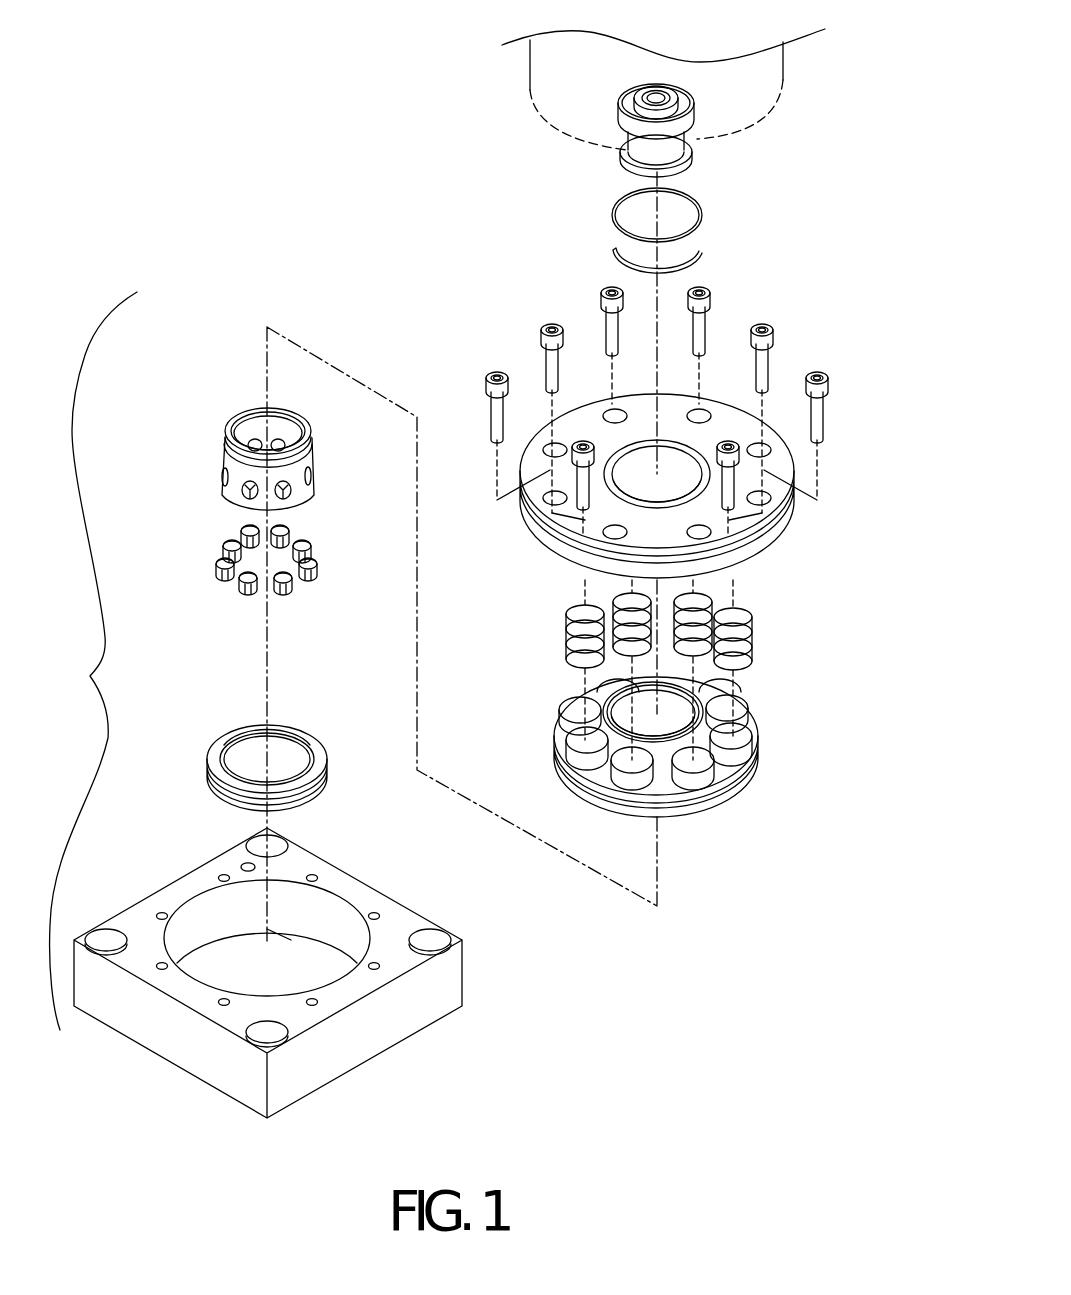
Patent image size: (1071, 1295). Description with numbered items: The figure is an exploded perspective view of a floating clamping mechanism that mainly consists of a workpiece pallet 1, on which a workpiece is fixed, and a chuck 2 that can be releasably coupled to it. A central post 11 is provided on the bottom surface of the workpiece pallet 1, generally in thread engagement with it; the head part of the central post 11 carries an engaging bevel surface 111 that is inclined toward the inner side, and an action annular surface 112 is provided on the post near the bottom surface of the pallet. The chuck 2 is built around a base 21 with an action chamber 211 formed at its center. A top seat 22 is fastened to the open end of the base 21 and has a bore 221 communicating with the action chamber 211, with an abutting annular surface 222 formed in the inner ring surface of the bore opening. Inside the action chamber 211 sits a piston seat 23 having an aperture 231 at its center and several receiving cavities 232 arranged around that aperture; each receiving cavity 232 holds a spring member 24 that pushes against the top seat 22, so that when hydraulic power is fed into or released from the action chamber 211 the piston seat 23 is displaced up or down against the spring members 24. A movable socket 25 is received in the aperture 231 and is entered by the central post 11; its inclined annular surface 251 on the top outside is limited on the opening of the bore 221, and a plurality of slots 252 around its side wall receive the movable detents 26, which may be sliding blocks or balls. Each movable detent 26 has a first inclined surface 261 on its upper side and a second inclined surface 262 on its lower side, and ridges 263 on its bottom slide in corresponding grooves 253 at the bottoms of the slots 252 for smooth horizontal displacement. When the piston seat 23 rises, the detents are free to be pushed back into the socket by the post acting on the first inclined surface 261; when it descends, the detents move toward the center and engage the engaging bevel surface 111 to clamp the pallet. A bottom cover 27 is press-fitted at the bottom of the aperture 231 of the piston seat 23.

The workpiece pallet 1 is at (783, 79).
The central post 11 is at (697, 178).
The engaging bevel surface 111 is at (678, 157).
The action annular surface 112 is at (694, 122).
The chuck 2 is at (470, 692).
The base 21 is at (279, 968).
The action chamber 211 is at (305, 918).
The top seat 22 is at (675, 437).
The bore 221 is at (642, 478).
The abutting annular surface 222 is at (672, 473).
The piston seat 23 is at (722, 821).
The aperture 231 is at (653, 730).
The receiving cavities 232 is at (698, 778).
The spring member 24 is at (752, 637).
The movable socket 25 is at (259, 389).
The inclined annular surface 251 is at (296, 458).
The slots 252 is at (223, 467).
The grooves 253 is at (253, 494).
The movable detents 26 is at (256, 545).
The first inclined surface 261 is at (280, 537).
The second inclined surface 262 is at (295, 548).
The ridges 263 is at (297, 582).
The bottom cover 27 is at (320, 758).